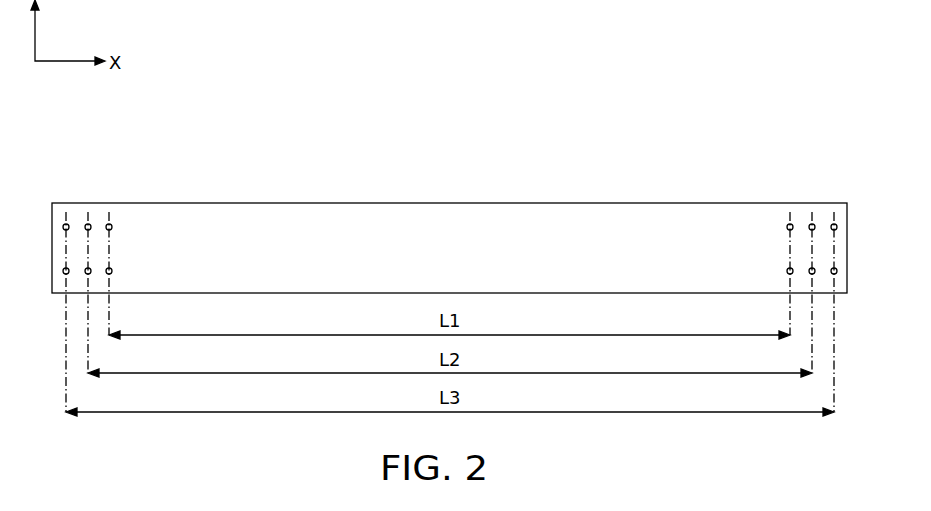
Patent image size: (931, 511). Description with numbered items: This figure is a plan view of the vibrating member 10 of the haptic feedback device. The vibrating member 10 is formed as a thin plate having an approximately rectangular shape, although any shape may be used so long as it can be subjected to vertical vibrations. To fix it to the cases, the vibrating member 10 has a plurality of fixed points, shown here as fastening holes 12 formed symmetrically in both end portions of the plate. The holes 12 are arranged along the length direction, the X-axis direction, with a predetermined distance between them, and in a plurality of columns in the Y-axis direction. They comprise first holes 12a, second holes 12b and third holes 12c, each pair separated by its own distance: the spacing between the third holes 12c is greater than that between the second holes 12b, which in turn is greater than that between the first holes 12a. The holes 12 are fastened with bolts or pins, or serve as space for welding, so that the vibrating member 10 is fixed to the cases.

The vibrating member 10 is at (455, 226).
The fastening holes 12 is at (143, 140).
The first holes 12a is at (112, 227).
The second holes 12b is at (90, 224).
The third holes 12c is at (65, 224).